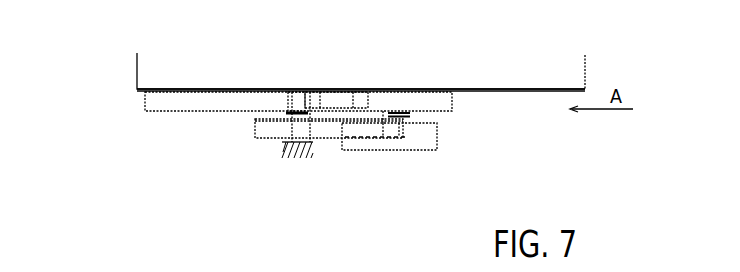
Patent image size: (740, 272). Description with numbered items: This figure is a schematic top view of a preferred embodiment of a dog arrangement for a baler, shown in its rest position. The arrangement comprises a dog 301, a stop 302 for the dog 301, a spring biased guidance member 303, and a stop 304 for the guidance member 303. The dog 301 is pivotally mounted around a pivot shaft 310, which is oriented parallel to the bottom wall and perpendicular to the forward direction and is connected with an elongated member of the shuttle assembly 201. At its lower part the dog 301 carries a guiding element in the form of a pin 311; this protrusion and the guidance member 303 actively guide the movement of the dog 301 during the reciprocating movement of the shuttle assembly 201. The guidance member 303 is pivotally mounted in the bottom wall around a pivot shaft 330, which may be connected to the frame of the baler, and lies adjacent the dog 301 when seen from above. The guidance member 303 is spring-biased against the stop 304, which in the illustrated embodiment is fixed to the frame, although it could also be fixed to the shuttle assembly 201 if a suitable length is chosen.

The shuttle assembly 201 is at (537, 70).
The dog 301 is at (147, 100).
The stop for the dog 302 is at (332, 93).
The spring biased guidance member 303 is at (255, 129).
The stop for the guidance member 304 is at (415, 143).
The pivot shaft 310 is at (298, 90).
The pin 311 is at (412, 114).
The pivot shaft 330 is at (292, 143).